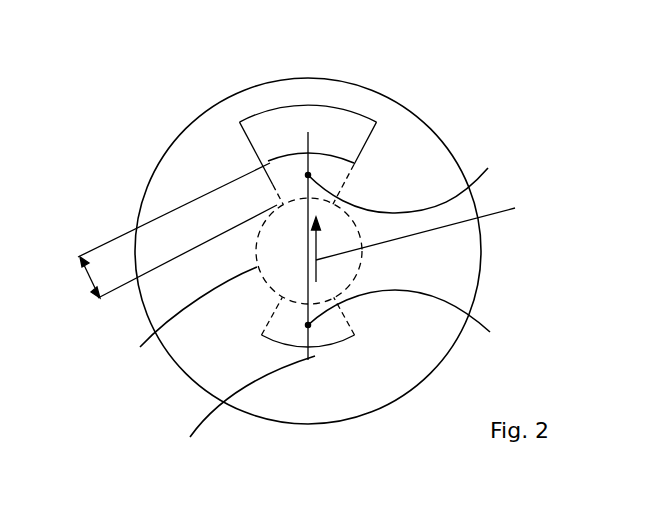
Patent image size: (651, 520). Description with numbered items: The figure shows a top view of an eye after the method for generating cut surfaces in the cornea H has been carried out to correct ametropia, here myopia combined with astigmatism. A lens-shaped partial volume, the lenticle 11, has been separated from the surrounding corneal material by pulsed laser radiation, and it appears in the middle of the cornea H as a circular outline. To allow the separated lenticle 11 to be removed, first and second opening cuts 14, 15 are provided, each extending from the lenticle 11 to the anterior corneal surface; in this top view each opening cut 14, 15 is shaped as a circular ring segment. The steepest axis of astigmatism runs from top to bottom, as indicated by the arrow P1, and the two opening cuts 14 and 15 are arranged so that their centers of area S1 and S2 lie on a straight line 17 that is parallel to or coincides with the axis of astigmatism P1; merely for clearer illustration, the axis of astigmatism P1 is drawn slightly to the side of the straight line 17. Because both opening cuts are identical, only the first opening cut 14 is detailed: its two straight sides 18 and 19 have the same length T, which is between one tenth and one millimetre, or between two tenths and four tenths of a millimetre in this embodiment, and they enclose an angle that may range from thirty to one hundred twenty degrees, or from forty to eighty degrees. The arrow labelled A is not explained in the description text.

The lenticle 11 is at (185, 321).
The first opening cut 14 is at (358, 162).
The second opening cut 15 is at (343, 313).
The straight line 17 is at (244, 410).
The straight side of the opening cut 18 is at (340, 190).
The straight side of the opening cut 19 is at (266, 183).
The cornea H is at (177, 362).
The length of the straight sides T is at (92, 277).
The rotation direction A is at (272, 430).
The center of area of the first opening cut S1 is at (414, 182).
The center of area of the second opening cut S2 is at (415, 318).
The axis of astigmatism P1 is at (429, 228).